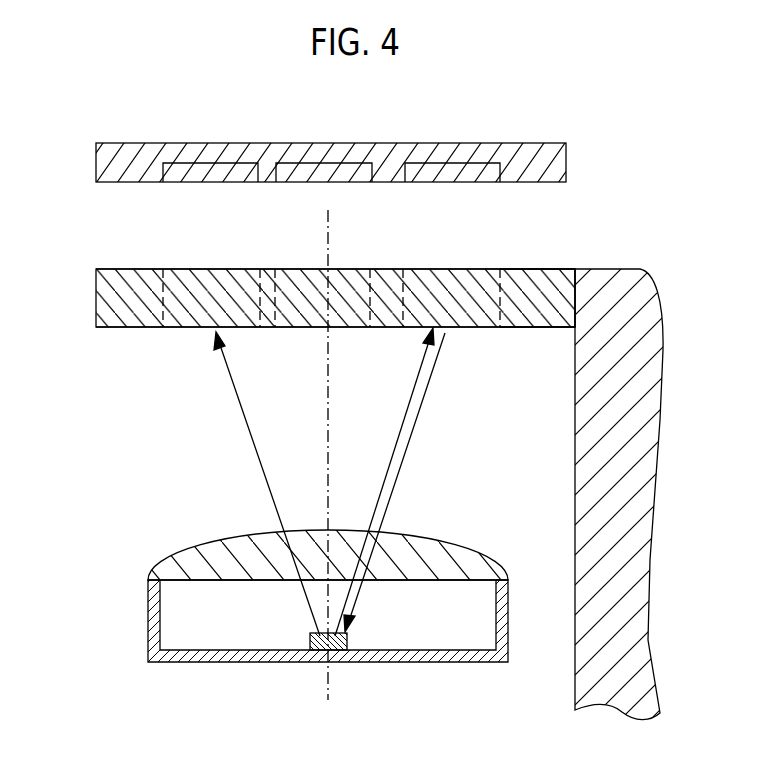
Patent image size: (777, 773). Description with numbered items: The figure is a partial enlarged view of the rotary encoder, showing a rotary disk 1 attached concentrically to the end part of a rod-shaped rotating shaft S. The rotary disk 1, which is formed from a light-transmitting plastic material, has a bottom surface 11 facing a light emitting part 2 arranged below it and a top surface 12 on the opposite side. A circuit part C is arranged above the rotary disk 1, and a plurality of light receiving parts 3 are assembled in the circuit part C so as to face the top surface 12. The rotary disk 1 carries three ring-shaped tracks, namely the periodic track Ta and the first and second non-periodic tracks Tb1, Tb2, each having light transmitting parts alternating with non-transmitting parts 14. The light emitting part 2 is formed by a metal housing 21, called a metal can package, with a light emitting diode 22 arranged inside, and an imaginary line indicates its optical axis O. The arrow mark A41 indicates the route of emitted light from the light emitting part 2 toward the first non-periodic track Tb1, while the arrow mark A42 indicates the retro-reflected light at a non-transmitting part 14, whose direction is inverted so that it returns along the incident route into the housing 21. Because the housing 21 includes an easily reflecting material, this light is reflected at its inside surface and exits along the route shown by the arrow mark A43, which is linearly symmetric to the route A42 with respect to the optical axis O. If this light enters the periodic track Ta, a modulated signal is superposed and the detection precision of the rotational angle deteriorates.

The rotary disk 1 is at (100, 252).
The light emitting part 2 is at (294, 616).
The light receiving parts 3 is at (435, 176).
The bottom surface 11 is at (133, 328).
The top surface 12 is at (115, 268).
The non-transmitting parts 14 is at (480, 265).
The housing 21 is at (245, 663).
The light emitting diode 22 is at (315, 651).
The circuit part C is at (558, 126).
The rotating shaft S is at (600, 282).
The optical axis O is at (332, 395).
The periodic track Ta is at (300, 288).
The first non-periodic track Tb1 is at (435, 287).
The second non-periodic track Tb2 is at (220, 290).
The arrow mark A41 is at (418, 384).
The arrow mark A42 is at (405, 445).
The arrow mark A43 is at (247, 437).